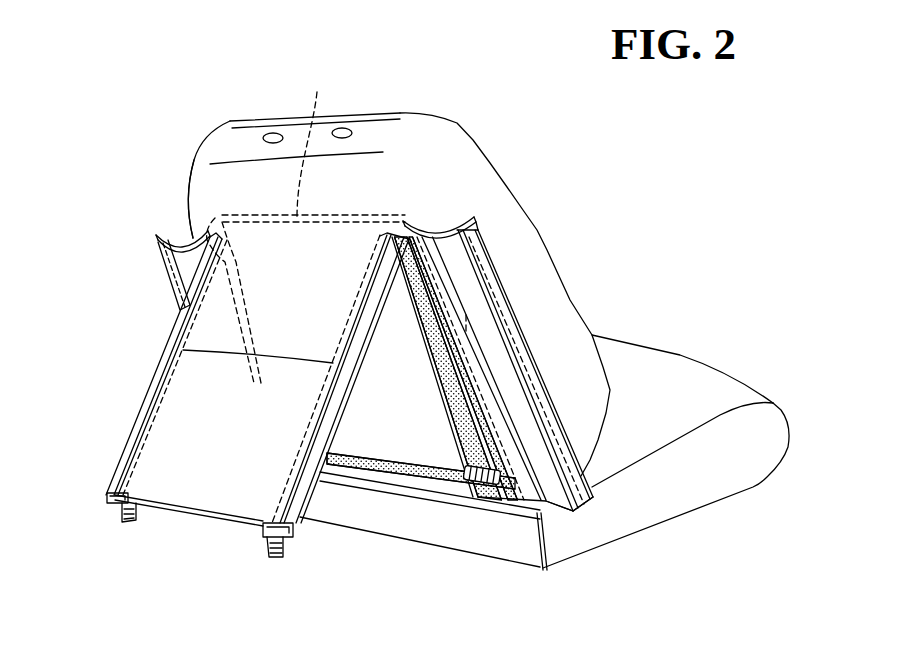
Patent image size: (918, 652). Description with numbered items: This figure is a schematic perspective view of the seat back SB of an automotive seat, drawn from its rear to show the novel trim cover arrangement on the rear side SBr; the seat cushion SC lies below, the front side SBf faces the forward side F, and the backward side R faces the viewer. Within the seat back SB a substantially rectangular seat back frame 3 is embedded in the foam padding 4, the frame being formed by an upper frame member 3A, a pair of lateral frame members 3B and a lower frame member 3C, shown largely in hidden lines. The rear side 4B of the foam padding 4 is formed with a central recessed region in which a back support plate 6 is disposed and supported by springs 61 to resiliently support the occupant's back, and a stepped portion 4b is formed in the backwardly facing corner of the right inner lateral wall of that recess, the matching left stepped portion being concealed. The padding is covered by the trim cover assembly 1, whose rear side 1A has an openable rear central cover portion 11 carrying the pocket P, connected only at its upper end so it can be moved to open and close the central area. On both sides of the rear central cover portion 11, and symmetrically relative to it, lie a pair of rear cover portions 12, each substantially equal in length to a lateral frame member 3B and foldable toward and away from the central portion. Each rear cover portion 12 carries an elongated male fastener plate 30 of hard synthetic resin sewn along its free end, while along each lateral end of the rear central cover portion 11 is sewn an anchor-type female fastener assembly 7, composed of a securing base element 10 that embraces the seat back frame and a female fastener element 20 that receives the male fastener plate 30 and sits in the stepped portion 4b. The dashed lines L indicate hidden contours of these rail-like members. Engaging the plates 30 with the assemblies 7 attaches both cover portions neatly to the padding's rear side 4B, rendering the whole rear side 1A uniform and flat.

The trim cover assembly 1 is at (380, 113).
The rear side of trim cover assembly 1A is at (250, 233).
The seat back frame 3 is at (407, 207).
The upper frame member 3A is at (315, 142).
The lateral frame member 3B is at (228, 220).
The lower frame member 3C is at (377, 475).
The foam padding 4 is at (457, 403).
The stepped portion 4b is at (443, 347).
The rear side of foam padding 4B is at (537, 512).
The back support plate 6 is at (428, 453).
The female fastener assembly 7 is at (103, 470).
The securing base element 10 is at (138, 522).
The rear central cover portion 11 is at (212, 325).
The rear cover portion 12 is at (188, 246).
The female fastener element 20 is at (123, 450).
The male fastener plate 30 is at (178, 277).
The spring 61 is at (473, 482).
The hidden line of rail L is at (155, 418).
The pocket P is at (182, 478).
The backward side R is at (68, 212).
The forward side F is at (786, 208).
The seat back SB is at (600, 310).
The front side of seat back SBf is at (525, 208).
The rear side of seat back SBr is at (145, 363).
The seat cushion SC is at (738, 390).